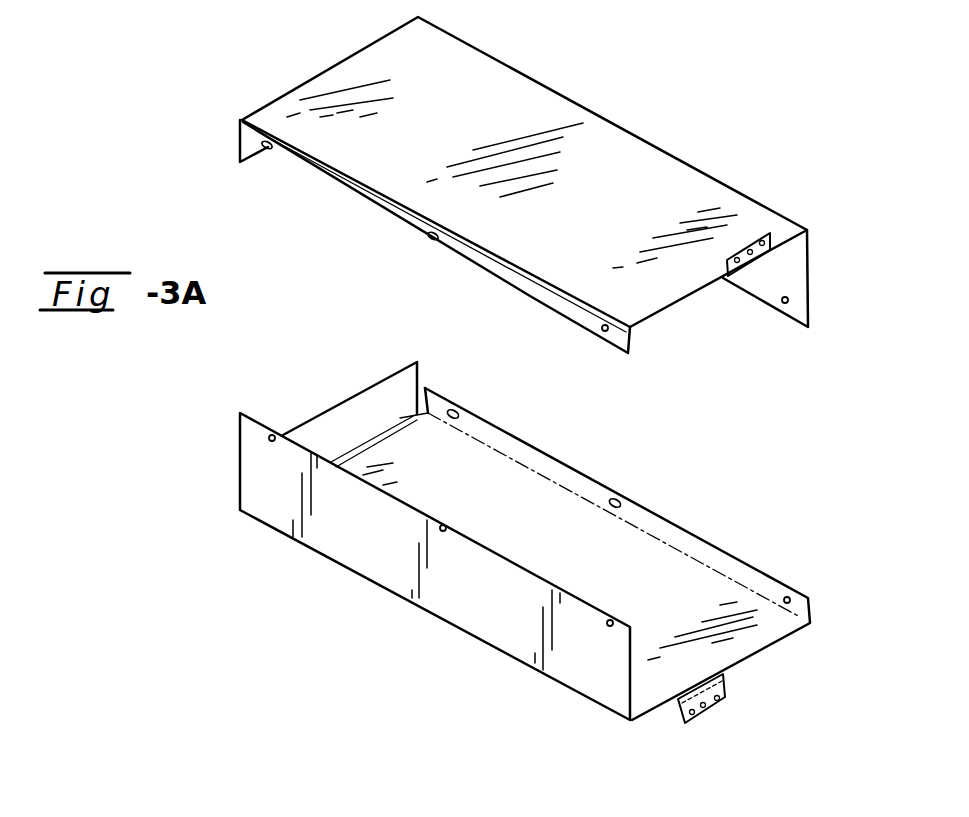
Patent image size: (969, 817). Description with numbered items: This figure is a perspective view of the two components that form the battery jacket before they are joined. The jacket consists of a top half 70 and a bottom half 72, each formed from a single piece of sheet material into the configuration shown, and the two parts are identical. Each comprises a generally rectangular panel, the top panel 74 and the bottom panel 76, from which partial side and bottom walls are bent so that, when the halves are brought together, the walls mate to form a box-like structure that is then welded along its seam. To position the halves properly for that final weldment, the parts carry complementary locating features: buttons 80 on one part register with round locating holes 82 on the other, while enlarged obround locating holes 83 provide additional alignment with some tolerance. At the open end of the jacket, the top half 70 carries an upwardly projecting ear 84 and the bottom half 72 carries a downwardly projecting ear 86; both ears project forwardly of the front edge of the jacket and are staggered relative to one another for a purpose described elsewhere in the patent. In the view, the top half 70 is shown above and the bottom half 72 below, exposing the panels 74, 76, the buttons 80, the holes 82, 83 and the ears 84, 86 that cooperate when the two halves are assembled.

The top half 70 is at (617, 120).
The bottom half 72 is at (567, 457).
The top panel 74 is at (487, 110).
The bottom panel 76 is at (660, 583).
The buttons 80 is at (783, 305).
The round locating holes 82 is at (604, 333).
The enlarged obround locating holes 83 is at (267, 155).
The upwardly projecting ear 84 is at (748, 232).
The downwardly projecting ear 86 is at (707, 718).